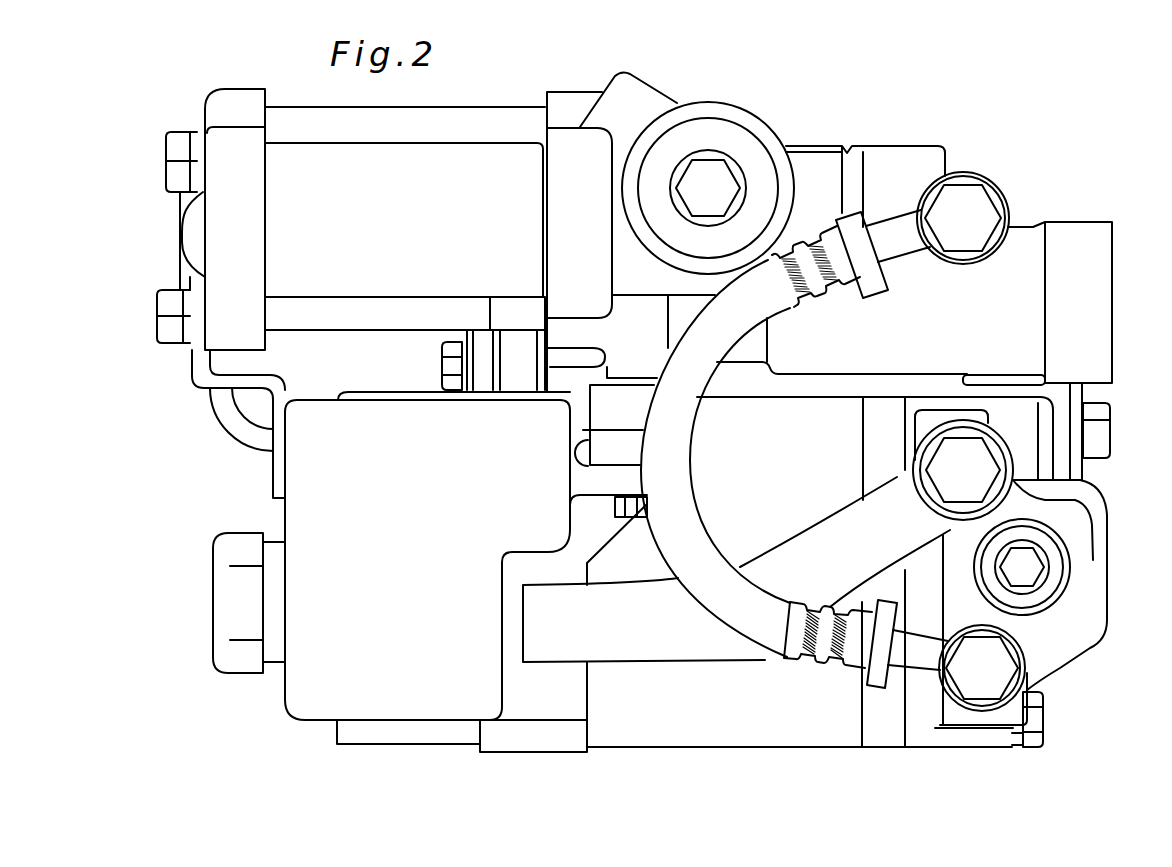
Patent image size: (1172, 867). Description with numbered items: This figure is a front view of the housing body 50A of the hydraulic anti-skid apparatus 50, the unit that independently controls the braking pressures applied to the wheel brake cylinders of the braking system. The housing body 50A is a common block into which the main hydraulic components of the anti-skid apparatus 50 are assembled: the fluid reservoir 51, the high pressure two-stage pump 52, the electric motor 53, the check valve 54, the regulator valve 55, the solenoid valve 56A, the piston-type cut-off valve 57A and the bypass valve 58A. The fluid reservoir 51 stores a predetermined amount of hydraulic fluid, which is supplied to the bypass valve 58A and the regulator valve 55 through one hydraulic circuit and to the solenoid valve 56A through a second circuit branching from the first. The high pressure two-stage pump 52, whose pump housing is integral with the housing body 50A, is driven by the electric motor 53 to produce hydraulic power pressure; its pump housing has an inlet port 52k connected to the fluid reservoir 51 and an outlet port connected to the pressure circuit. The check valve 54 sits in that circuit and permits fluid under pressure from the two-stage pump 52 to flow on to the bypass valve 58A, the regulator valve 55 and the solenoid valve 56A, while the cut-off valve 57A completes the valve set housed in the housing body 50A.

The anti-skid apparatus 50 is at (921, 133).
The housing body 50A is at (812, 168).
The fluid reservoir 51 is at (293, 512).
The high pressure two-stage pump 52 is at (1100, 621).
The inlet port 52k is at (908, 493).
The electric motor 53 is at (818, 733).
The check valve 54 is at (968, 172).
The regulator valve 55 is at (723, 150).
The solenoid valve 56A is at (421, 226).
The cut-off valve 57A is at (855, 296).
The bypass valve 58A is at (1017, 256).